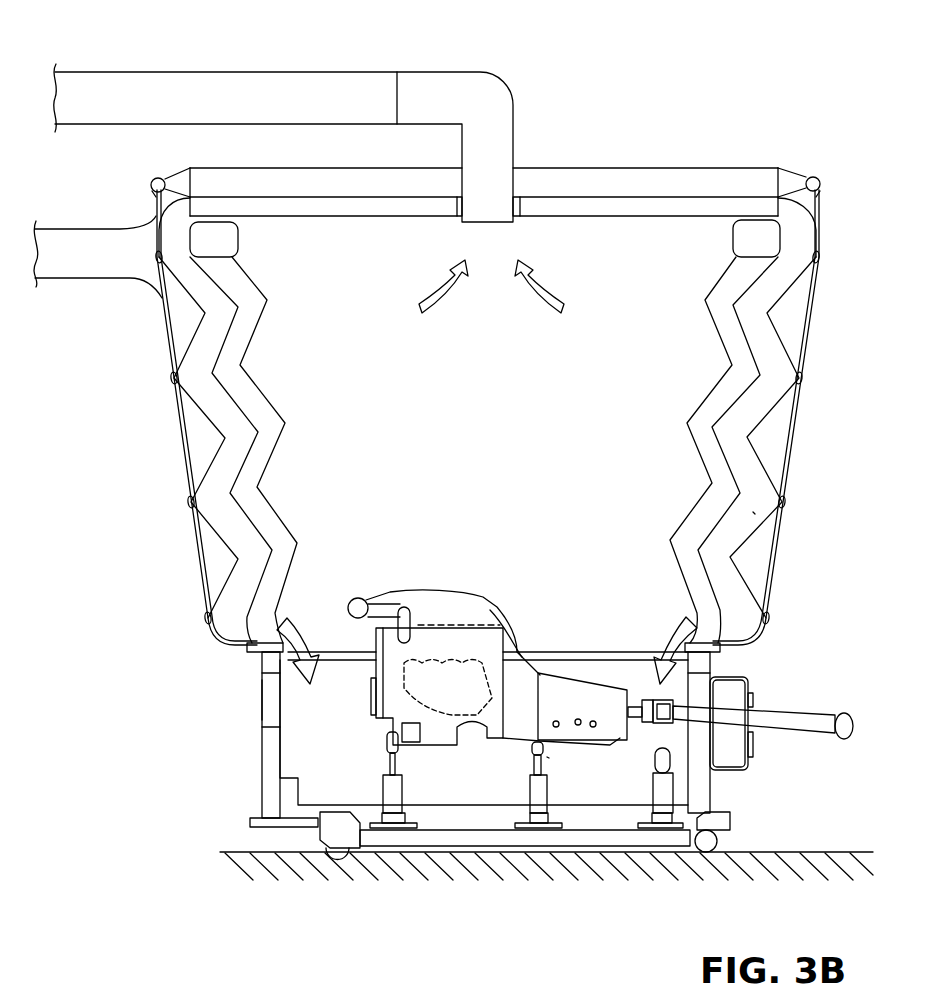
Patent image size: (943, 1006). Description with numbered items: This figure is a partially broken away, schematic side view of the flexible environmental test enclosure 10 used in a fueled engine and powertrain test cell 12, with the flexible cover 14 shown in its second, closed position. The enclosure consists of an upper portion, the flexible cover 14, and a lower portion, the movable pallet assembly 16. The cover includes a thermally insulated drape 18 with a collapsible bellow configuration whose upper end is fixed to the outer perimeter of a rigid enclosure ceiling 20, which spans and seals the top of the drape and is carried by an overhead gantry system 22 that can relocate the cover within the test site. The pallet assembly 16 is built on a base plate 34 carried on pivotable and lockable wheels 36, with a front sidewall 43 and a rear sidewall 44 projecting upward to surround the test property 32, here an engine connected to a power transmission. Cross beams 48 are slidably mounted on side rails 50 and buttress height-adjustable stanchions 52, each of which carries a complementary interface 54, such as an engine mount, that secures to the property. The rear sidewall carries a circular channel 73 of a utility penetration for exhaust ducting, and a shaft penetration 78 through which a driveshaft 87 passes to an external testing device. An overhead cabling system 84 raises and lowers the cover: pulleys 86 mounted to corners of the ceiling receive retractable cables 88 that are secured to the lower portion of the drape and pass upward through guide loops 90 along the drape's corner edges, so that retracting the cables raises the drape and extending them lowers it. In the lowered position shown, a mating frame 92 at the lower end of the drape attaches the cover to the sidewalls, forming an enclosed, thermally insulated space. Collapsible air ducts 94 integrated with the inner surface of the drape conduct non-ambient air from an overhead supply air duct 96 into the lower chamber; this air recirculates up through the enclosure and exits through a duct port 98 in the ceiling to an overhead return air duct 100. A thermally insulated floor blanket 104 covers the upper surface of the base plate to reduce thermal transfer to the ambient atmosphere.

The flexible environmental test enclosure 10 is at (78, 485).
The test cell 12 is at (863, 851).
The flexible cover 14 is at (140, 353).
The movable pallet assembly 16 is at (191, 655).
The thermally insulated drape 18 is at (753, 512).
The rigid enclosure ceiling 20 is at (592, 208).
The overhead gantry system 22 is at (683, 178).
The test property 32 is at (525, 668).
The base plate 34 is at (655, 855).
The wheels 36 is at (320, 850).
The front sidewall 43 is at (263, 743).
The rear sidewall 44 is at (715, 658).
The cross beams 48 is at (380, 818).
The side rails 50 is at (408, 835).
The stanchions 52 is at (530, 797).
The complementary interface 54 is at (547, 757).
The circular channel 73 is at (268, 718).
The shaft penetration 78 is at (753, 707).
The overhead cabling system 84 is at (128, 200).
The pulleys 86 is at (180, 176).
The driveshaft 87 is at (810, 718).
The retractable cables 88 is at (195, 556).
The guide loops 90 is at (820, 256).
The mating frame 92 is at (340, 642).
The collapsible air ducts 94 is at (287, 422).
The overhead supply air duct 96 is at (87, 267).
The duct port 98 is at (520, 214).
The overhead return air duct 100 is at (255, 86).
The thermally insulated floor blanket 104 is at (288, 777).